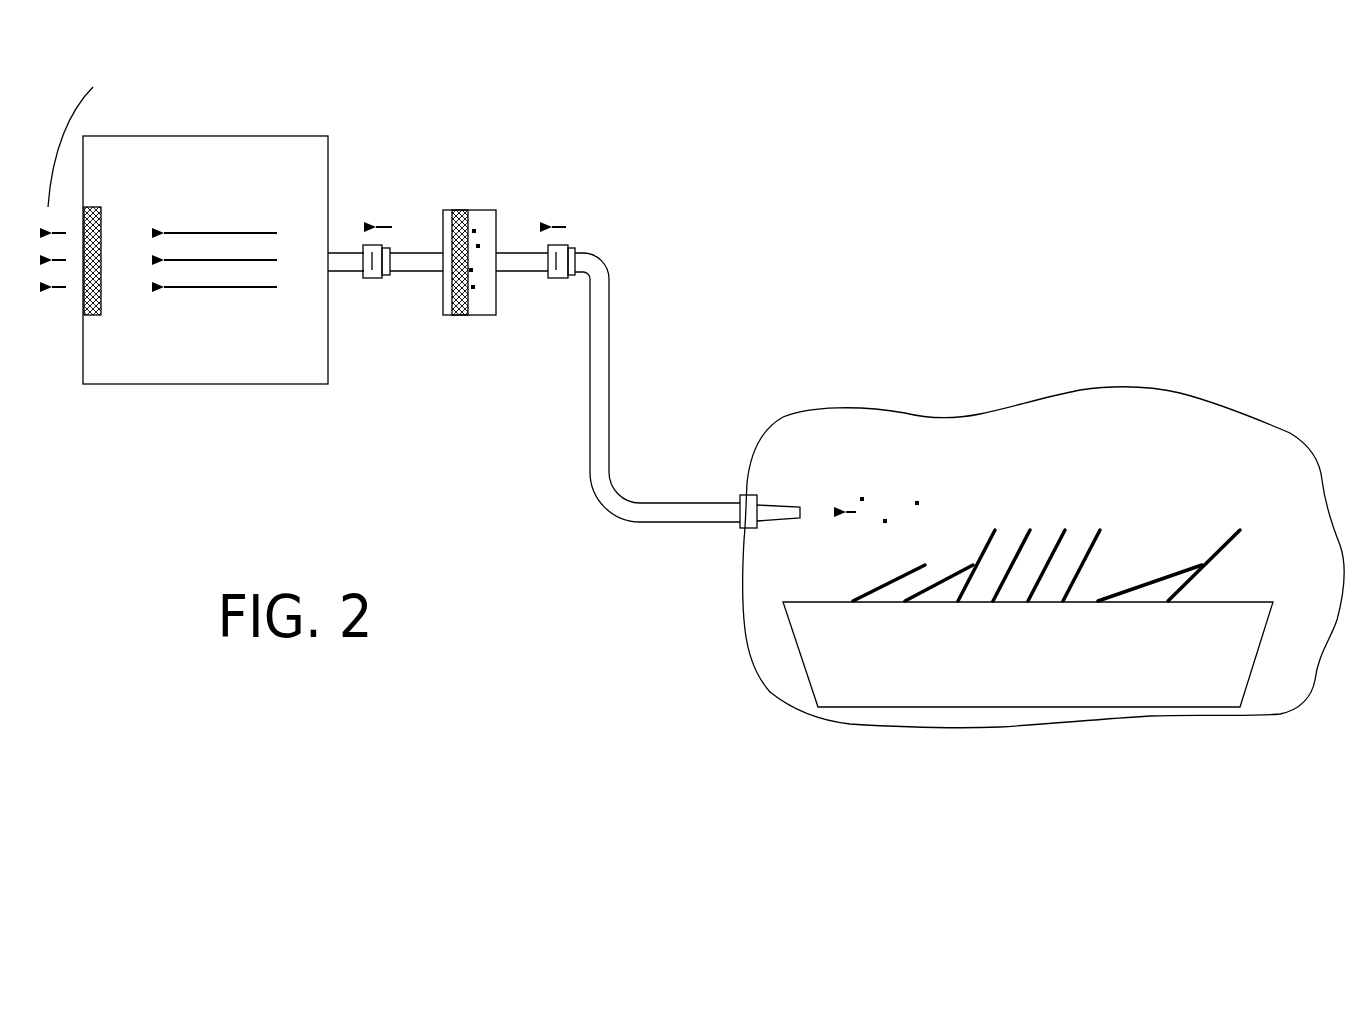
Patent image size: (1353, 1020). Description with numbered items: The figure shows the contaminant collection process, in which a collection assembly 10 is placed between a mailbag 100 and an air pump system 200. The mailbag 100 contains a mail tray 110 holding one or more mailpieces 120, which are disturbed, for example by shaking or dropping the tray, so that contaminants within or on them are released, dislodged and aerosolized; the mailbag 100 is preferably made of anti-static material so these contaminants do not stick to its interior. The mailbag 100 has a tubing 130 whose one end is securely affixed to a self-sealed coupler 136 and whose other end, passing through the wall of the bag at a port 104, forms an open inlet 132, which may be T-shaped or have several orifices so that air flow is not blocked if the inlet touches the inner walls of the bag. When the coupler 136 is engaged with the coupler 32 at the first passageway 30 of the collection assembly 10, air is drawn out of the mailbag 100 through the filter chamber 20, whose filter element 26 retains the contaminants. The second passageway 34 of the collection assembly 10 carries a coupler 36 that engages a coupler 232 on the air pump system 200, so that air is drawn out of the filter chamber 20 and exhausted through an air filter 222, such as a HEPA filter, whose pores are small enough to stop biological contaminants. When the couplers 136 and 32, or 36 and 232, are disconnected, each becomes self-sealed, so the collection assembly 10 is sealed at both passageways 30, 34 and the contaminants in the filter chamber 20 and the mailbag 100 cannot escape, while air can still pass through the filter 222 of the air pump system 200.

The collection assembly 10 is at (493, 170).
The filter chamber 20 is at (478, 310).
The filter element 26 is at (465, 210).
The first passageway 30 is at (512, 260).
The coupler 32 is at (552, 280).
The second passageway 34 is at (431, 250).
The coupler 36 is at (388, 268).
The mailbag 100 is at (920, 417).
The port connector 104 is at (743, 512).
The mail tray 110 is at (1010, 665).
The mailpieces 120 is at (1083, 530).
The tubing 130 is at (609, 352).
The open inlet 132 is at (782, 512).
The self-sealed coupler 136 is at (576, 250).
The air pump system 200 is at (207, 147).
The air filter 222 is at (101, 300).
The coupler 232 is at (373, 280).